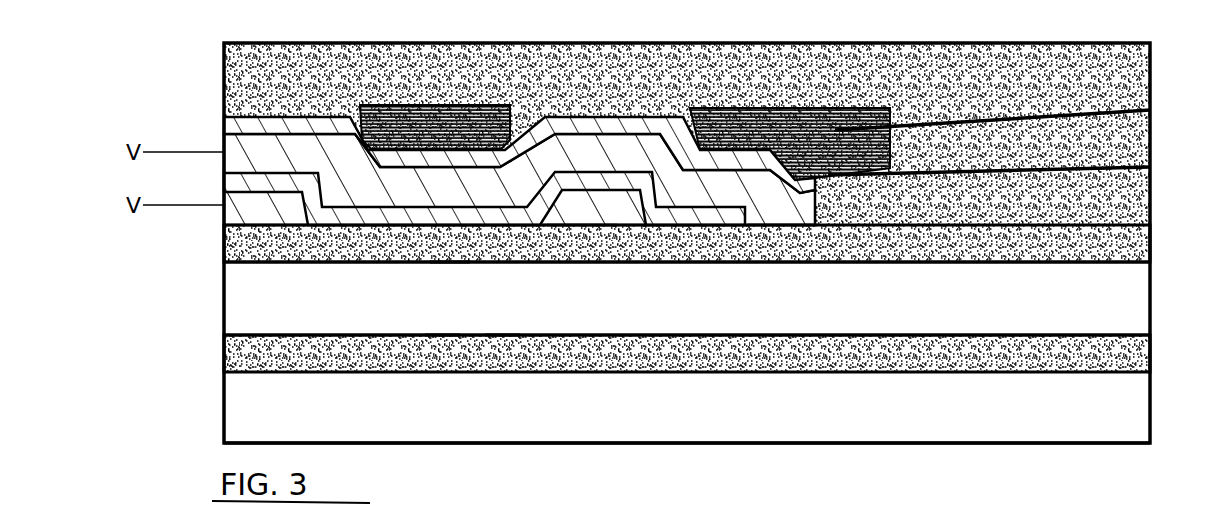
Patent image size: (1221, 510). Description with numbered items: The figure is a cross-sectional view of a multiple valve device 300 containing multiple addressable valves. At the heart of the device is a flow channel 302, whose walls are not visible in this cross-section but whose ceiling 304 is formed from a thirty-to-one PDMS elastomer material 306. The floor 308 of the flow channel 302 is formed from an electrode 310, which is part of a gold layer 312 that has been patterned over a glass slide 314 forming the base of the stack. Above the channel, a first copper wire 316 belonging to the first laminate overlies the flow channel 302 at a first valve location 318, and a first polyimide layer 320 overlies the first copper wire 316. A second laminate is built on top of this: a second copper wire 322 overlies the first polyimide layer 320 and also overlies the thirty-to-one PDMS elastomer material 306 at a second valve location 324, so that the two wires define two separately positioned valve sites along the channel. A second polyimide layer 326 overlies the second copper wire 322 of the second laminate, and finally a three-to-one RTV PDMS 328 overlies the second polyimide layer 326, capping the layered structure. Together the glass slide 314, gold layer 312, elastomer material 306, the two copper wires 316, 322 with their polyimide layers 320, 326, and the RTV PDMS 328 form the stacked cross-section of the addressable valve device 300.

The multiple valve device 300 is at (1205, 231).
The flow channel 302 is at (352, 311).
The ceiling 304 is at (447, 272).
The 30:1 PDMS elastomer material 306 is at (224, 262).
The floor 308 is at (445, 326).
The electrode 310 is at (508, 325).
The gold layer 312 is at (224, 355).
The glass slide 314 is at (242, 408).
The first copper wire 316 is at (224, 216).
The first valve location 318 is at (617, 268).
The first polyimide layer 320 is at (224, 180).
The second copper wire 322 is at (224, 158).
The second valve location 324 is at (818, 268).
The second polyimide layer 326 is at (224, 127).
The 3:1 RTV PDMS 328 is at (224, 78).